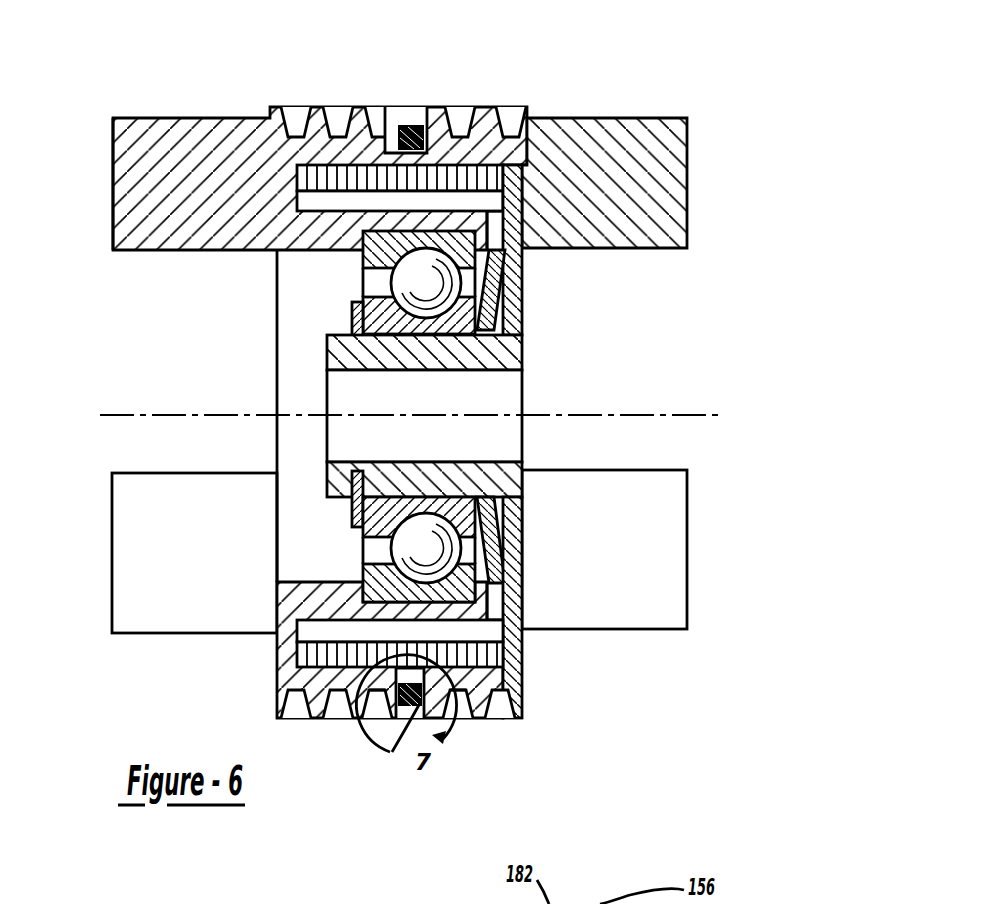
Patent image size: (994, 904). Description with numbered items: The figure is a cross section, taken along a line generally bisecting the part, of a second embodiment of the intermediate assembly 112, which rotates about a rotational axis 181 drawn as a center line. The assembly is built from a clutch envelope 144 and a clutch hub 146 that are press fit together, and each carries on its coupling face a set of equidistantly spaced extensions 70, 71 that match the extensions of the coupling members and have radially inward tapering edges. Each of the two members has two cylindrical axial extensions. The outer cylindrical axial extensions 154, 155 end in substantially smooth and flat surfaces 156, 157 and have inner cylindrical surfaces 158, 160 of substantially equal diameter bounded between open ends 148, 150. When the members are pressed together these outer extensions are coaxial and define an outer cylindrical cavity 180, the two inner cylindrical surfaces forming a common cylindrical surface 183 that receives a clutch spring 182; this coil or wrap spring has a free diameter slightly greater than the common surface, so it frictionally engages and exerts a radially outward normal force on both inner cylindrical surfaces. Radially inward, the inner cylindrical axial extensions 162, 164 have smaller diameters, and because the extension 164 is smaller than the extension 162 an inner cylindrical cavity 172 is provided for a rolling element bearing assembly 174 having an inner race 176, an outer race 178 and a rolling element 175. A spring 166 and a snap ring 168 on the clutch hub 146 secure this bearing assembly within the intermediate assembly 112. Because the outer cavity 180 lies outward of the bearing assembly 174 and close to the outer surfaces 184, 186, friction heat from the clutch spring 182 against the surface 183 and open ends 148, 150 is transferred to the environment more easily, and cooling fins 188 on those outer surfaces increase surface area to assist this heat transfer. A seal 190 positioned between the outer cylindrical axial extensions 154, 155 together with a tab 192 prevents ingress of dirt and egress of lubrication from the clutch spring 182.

The intermediate assembly 112 is at (150, 74).
The extension 70 is at (128, 118).
The extension 71 is at (700, 140).
The clutch envelope 144 is at (113, 175).
The clutch hub 146 is at (688, 188).
The open end 148 is at (300, 200).
The open end 150 is at (507, 227).
The outer cylindrical axial extension 154 is at (396, 703).
The outer cylindrical axial extension 155 is at (514, 700).
The flat surface 156 is at (470, 655).
The flat surface 157 is at (352, 716).
The inner cylindrical surface 158 is at (378, 165).
The inner cylindrical surface 160 is at (455, 165).
The inner cylindrical axial extension 162 is at (473, 250).
The inner cylindrical axial extension 164 is at (470, 353).
The spring 166 is at (505, 572).
The snap ring 168 is at (345, 526).
The inner cylindrical cavity 172 is at (487, 255).
The rolling element bearing assembly 174 is at (440, 525).
The rolling element 175 is at (445, 538).
The inner race 176 is at (385, 537).
The outer race 178 is at (453, 587).
The outer cylindrical cavity 180 is at (310, 631).
The rotational axis 181 is at (486, 413).
The clutch spring 182 is at (465, 165).
The common cylindrical surface 183 is at (440, 140).
The outer surface 184 is at (278, 720).
The outer surface 186 is at (480, 712).
The cooling fins 188 is at (312, 110).
The seal 190 is at (440, 738).
The tab 192 is at (393, 750).